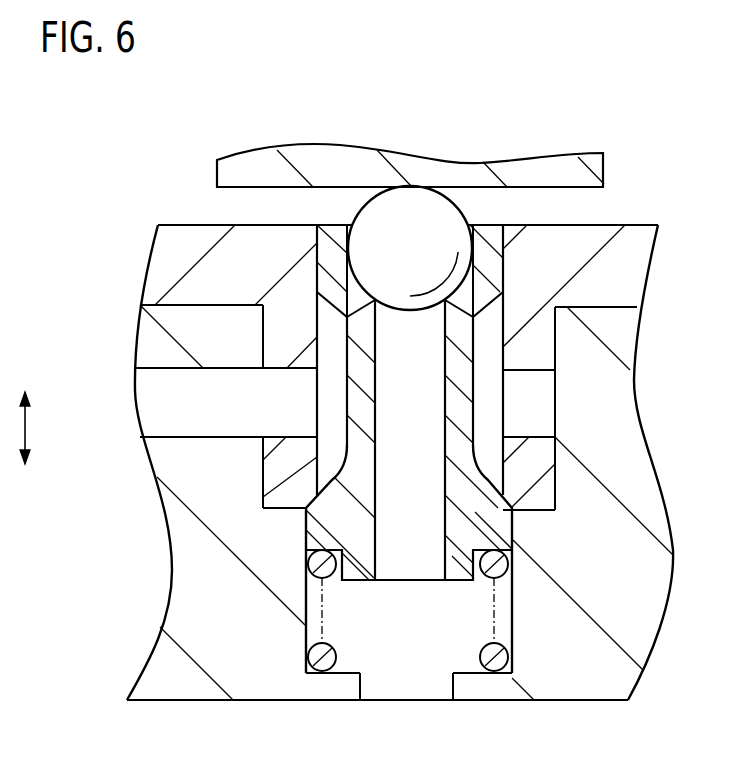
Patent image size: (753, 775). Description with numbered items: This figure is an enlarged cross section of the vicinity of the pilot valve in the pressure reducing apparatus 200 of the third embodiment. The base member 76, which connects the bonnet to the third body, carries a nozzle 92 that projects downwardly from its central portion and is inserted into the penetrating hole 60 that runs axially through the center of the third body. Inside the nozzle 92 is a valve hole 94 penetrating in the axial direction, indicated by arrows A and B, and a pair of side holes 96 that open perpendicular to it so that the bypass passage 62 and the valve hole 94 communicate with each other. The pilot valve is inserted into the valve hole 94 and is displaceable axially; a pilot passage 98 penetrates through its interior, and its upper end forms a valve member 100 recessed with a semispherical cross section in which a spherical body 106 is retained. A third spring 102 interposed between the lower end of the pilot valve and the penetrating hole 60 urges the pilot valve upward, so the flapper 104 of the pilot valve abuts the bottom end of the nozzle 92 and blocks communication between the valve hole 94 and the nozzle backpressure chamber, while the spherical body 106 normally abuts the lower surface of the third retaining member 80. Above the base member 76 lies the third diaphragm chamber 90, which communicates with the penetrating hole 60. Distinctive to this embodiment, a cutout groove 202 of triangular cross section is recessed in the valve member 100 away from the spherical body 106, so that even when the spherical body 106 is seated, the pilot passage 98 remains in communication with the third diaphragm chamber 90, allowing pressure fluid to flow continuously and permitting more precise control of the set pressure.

The pressure reducing apparatus 200 is at (707, 121).
The third diaphragm chamber 90 is at (260, 203).
The third retaining member 80 is at (534, 170).
The valve member 100 is at (350, 238).
The spherical body 106 is at (448, 213).
The cutout groove 202 is at (354, 288).
The base member 76 is at (654, 268).
The bypass passage 62 is at (157, 412).
The side holes 96 is at (290, 437).
The valve hole 94 is at (477, 360).
The flapper 104 is at (322, 500).
The nozzle 92 is at (542, 494).
The pilot passage 98 is at (440, 556).
The third spring 102 is at (337, 656).
The penetrating hole 60 is at (416, 690).